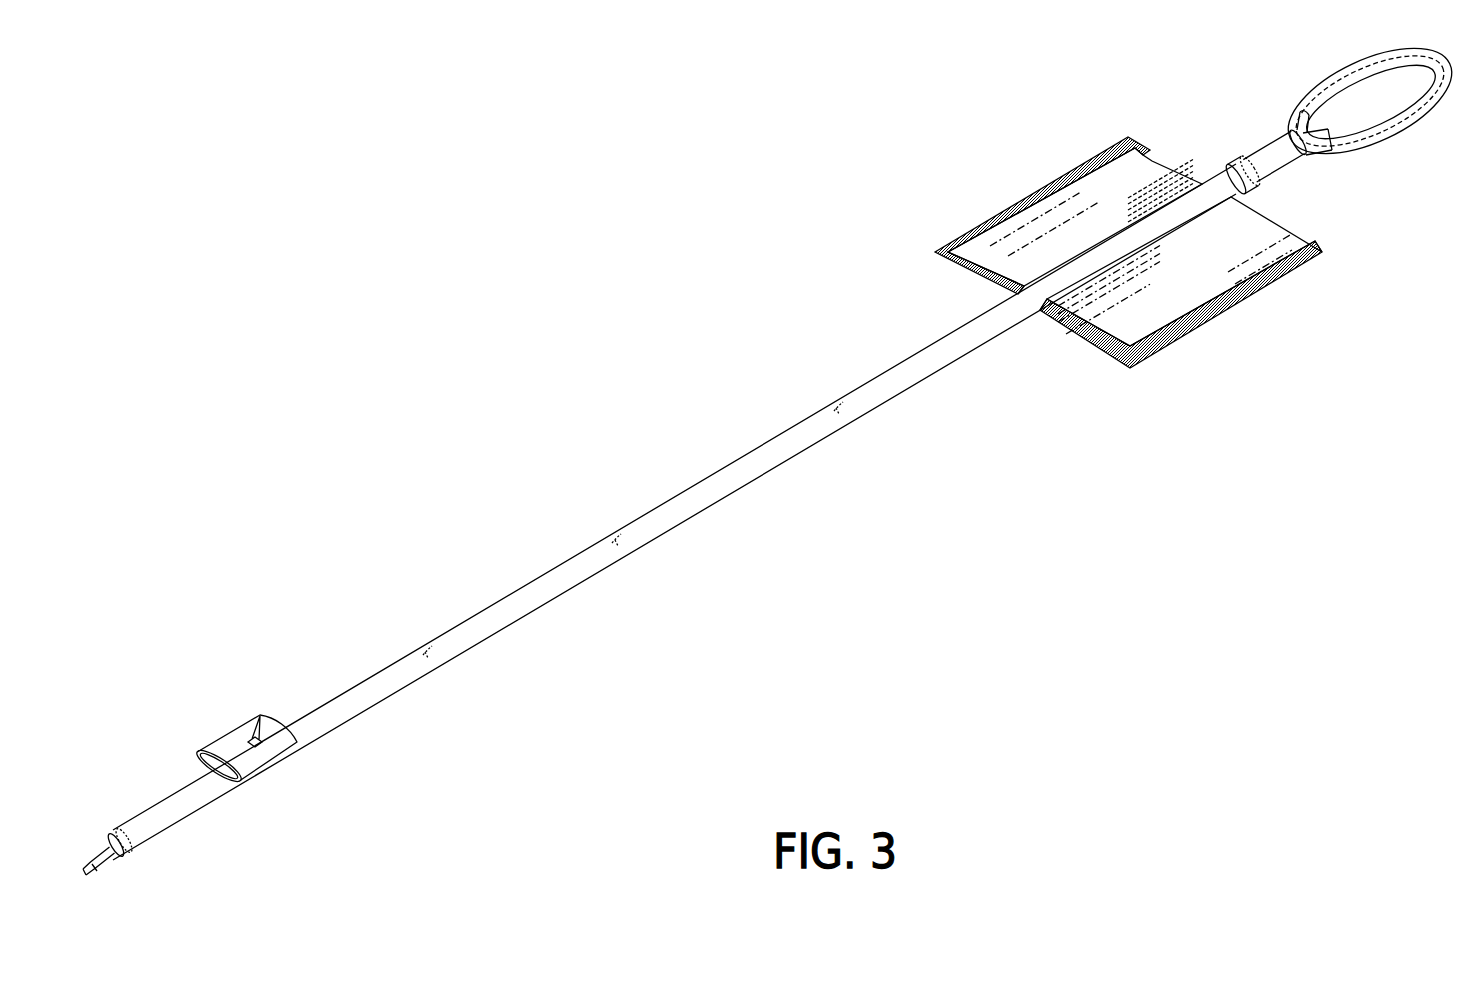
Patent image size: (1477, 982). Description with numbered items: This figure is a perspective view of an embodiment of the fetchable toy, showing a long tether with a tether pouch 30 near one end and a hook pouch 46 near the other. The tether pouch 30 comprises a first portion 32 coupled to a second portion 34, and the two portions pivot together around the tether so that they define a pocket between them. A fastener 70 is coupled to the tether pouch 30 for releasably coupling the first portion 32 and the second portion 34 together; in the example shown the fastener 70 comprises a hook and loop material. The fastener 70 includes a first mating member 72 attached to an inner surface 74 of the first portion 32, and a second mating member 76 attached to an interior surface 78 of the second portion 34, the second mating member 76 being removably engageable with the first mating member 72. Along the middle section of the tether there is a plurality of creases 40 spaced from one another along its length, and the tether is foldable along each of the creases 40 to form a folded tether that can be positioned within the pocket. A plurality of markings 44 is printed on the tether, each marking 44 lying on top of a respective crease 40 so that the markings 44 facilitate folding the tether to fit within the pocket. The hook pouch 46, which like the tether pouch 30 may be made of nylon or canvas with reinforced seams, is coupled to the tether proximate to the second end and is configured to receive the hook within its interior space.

The tether pouch 30 is at (989, 215).
The first portion 32 is at (1015, 185).
The second portion 34 is at (1246, 321).
The plurality of creases 40 is at (838, 432).
The plurality of markings 44 is at (839, 402).
The hook pouch 46 is at (238, 732).
The fastener 70 is at (962, 279).
The first mating member 72 is at (944, 258).
The inner surface 74 is at (1117, 213).
The second mating member 76 is at (1160, 349).
The interior surface 78 is at (1188, 275).